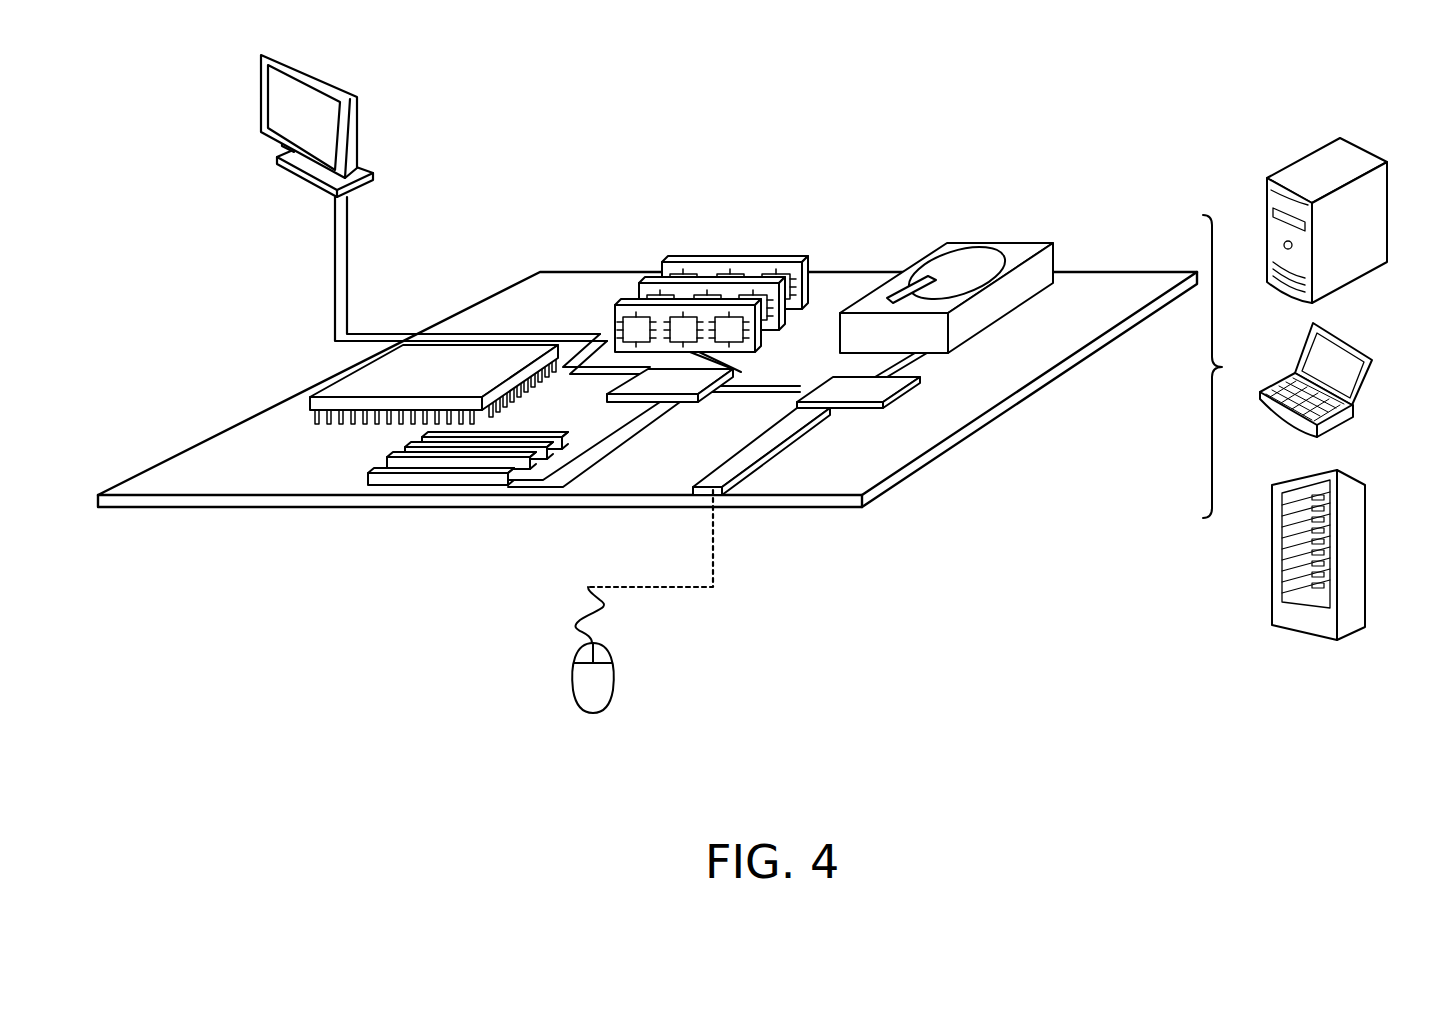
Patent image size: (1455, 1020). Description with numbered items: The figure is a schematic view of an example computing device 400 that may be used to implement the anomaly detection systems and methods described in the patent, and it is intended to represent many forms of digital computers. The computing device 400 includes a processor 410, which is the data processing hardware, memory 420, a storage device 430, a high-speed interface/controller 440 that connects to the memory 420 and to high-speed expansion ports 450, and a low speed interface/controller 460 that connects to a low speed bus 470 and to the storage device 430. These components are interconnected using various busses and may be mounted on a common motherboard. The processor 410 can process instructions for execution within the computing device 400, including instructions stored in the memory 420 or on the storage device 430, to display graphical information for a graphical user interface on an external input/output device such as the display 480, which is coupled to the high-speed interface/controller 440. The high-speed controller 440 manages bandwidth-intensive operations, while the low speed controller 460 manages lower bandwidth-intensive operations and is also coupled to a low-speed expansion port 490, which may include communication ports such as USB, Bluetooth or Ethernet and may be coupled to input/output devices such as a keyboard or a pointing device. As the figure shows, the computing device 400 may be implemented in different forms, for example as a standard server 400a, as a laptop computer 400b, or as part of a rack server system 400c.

The computing device 400 is at (813, 118).
The standard server 400a is at (1297, 158).
The laptop computer 400b is at (1353, 344).
The rack server system 400c is at (1360, 530).
The processor 410 is at (308, 399).
The memory 420 is at (737, 262).
The storage device 430 is at (1002, 243).
The high-speed interface/controller 440 is at (675, 403).
The high-speed expansion ports 450 is at (370, 468).
The low speed interface/controller 460 is at (847, 377).
The low speed bus 470 is at (797, 448).
The display 480 is at (258, 100).
The low-speed expansion port 490 is at (724, 495).